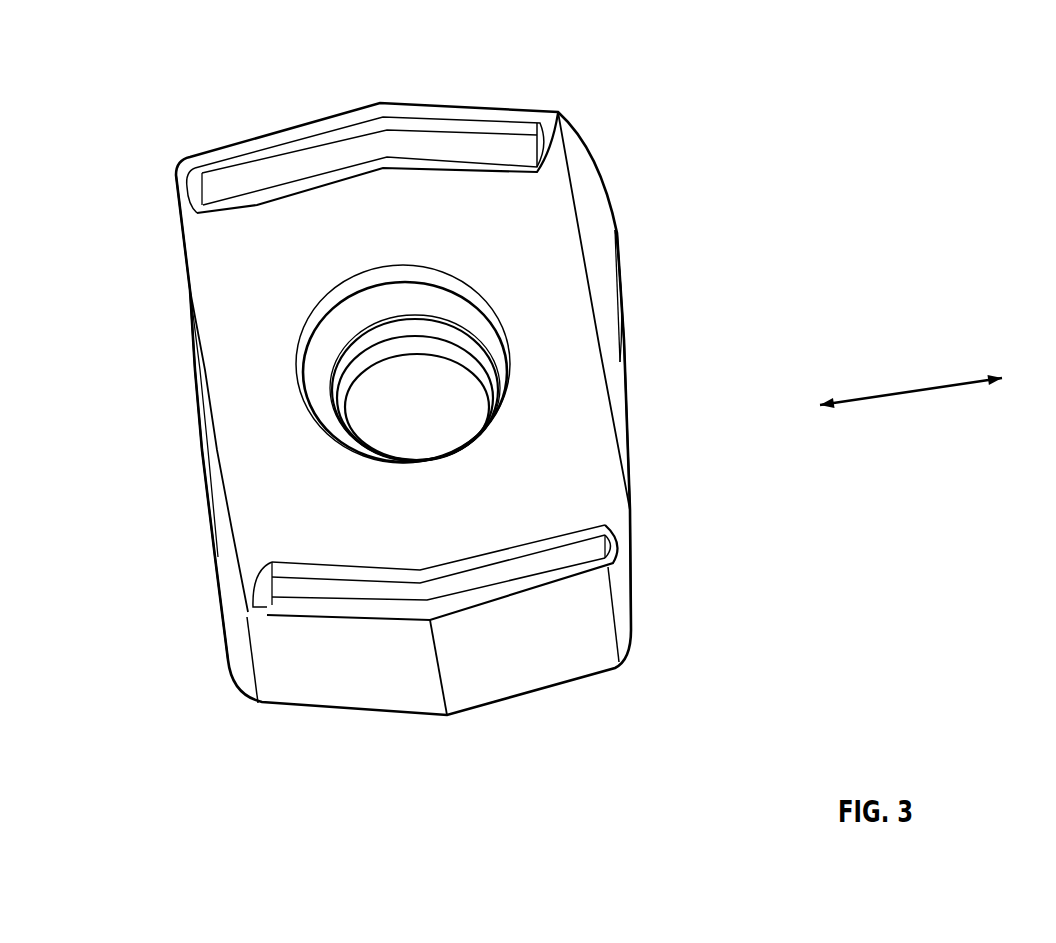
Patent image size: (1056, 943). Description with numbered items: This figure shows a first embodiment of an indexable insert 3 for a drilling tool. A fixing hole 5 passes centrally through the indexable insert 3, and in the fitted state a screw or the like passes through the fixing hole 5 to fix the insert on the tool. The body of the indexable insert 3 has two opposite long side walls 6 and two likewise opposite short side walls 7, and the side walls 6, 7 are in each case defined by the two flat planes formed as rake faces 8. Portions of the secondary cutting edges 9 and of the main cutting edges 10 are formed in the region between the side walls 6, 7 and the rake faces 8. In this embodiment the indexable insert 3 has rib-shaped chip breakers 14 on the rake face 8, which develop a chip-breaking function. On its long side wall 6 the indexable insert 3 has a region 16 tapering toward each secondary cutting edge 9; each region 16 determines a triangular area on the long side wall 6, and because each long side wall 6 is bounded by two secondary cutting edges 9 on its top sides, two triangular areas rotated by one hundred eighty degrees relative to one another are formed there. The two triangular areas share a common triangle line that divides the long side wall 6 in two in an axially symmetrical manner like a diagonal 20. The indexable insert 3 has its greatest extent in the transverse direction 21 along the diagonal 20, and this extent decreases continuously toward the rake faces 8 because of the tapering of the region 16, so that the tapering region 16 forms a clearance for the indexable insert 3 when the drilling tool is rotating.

The indexable insert 3 is at (490, 107).
The fixing hole 5 is at (397, 412).
The long side wall 6 is at (200, 462).
The short side wall 7 is at (312, 122).
The rake face 8 is at (538, 260).
The secondary cutting edge 9 is at (228, 512).
The main cutting edge 10 is at (403, 107).
The chip breaker 14 is at (512, 150).
The tapering region 16 is at (228, 588).
The diagonal 20 is at (205, 395).
The transverse direction 21 is at (915, 392).